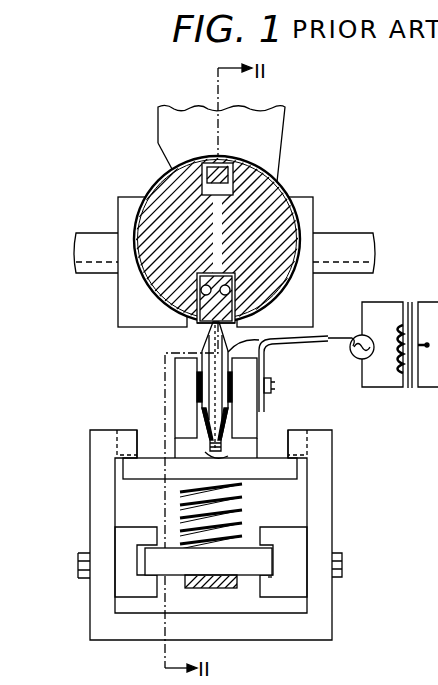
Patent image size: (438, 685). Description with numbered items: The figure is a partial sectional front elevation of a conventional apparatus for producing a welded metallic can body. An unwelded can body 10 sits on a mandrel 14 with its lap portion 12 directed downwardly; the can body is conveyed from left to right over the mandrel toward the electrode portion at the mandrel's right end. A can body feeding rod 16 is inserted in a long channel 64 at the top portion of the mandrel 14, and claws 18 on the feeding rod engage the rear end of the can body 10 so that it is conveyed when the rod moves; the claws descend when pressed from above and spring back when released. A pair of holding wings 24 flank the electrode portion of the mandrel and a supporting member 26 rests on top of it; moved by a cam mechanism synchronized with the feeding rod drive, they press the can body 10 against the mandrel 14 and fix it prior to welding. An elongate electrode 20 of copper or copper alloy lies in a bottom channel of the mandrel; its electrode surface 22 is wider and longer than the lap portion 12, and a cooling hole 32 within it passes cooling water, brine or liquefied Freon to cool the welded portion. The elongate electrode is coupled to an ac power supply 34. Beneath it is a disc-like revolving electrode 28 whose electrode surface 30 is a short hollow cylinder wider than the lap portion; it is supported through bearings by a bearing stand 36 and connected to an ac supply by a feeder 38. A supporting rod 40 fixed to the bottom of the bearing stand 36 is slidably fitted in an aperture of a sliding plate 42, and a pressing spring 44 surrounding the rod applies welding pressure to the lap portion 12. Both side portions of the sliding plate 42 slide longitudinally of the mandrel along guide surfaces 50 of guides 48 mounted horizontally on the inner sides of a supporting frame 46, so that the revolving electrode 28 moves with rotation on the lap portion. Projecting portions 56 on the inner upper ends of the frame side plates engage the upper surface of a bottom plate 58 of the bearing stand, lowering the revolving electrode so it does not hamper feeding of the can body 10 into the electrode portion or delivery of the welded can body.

The can body 10 is at (269, 193).
The lap portion 12 is at (207, 328).
The mandrel 14 is at (282, 188).
The can body feeding rod 16 is at (247, 163).
The claws 18 is at (222, 161).
The elongate electrode 20 is at (185, 313).
The electrode surface 22 is at (257, 303).
The holding wings 24 is at (125, 212).
The supporting member 26 is at (277, 118).
The revolving electrode 28 is at (263, 348).
The electrode surface 30 is at (240, 458).
The cooling hole 32 is at (201, 289).
The ac power supply 34 is at (353, 340).
The bearing stand 36 is at (252, 418).
The feeder 38 is at (326, 339).
The supporting rod 40 is at (226, 588).
The sliding plate 42 is at (173, 570).
The pressing spring 44 is at (243, 498).
The supporting frame 46 is at (323, 479).
The guides 48 is at (283, 530).
The guide surfaces 50 is at (268, 577).
The projecting portions 56 is at (300, 444).
The bottom plate 58 is at (153, 457).
The long channel 64 is at (193, 178).